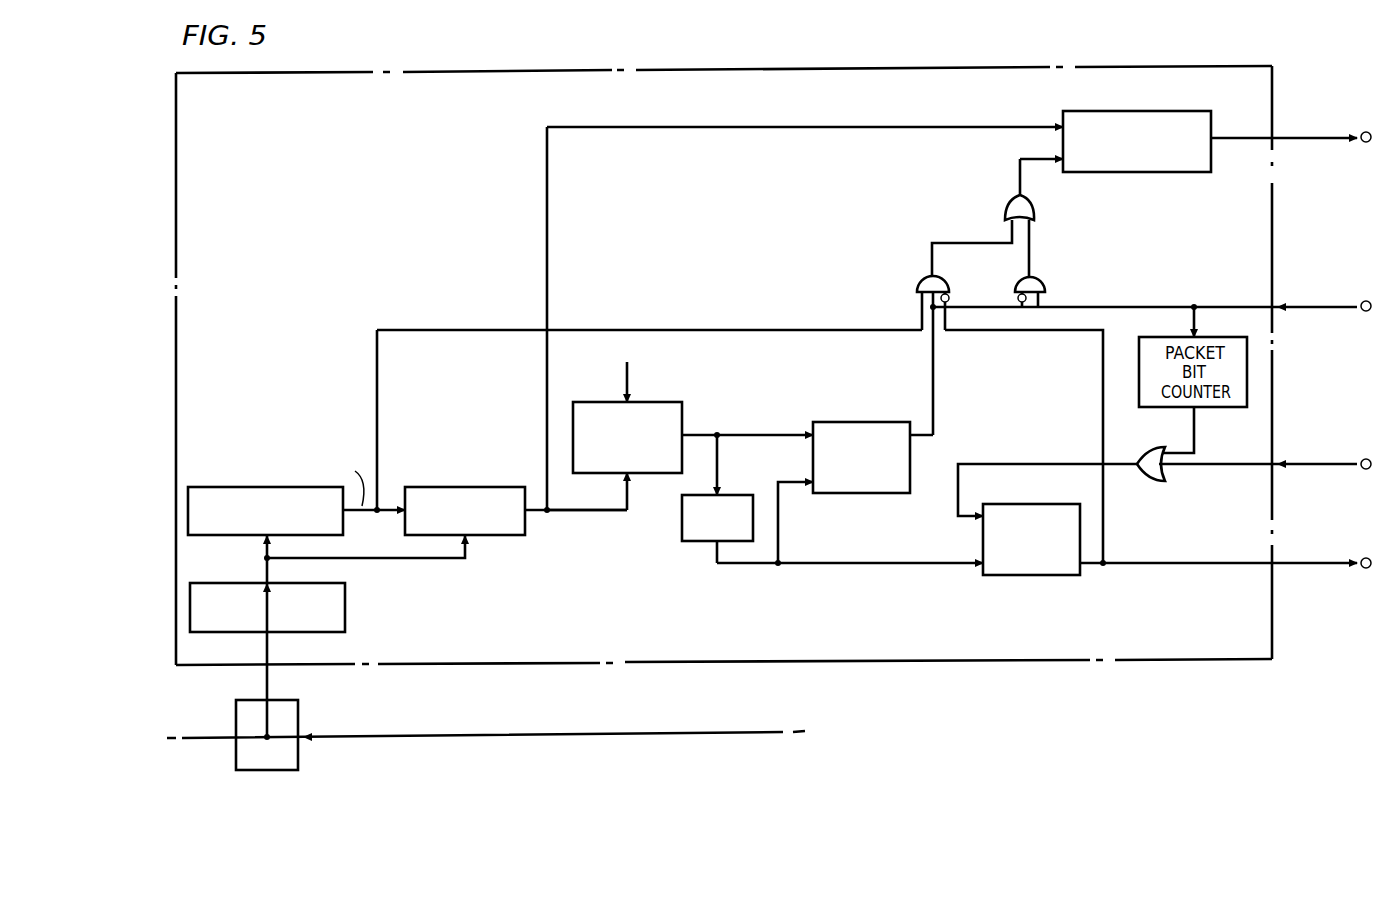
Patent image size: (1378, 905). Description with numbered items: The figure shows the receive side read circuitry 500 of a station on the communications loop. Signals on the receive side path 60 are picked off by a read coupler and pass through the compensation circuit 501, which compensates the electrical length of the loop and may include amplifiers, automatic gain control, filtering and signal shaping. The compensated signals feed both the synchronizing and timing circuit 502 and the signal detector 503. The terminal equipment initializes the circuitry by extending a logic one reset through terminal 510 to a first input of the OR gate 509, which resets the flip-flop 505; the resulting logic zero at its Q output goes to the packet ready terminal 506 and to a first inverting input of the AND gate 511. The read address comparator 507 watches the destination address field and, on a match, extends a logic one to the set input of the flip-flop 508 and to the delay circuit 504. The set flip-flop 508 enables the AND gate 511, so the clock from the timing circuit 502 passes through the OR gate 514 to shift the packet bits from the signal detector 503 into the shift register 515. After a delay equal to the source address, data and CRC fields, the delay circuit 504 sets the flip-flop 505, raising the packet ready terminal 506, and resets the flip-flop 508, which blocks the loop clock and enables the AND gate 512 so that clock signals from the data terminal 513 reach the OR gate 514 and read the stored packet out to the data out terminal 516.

The receive side read circuitry 500 is at (485, 72).
The compensation circuit 501 is at (345, 597).
The synchronizing and timing circuit 502 is at (250, 487).
The signal detector 503 is at (450, 487).
The delay circuit 504 is at (682, 520).
The flip-flop 505 is at (1037, 575).
The packet ready terminal 506 is at (1364, 569).
The read address comparator 507 is at (653, 402).
The flip-flop 508 is at (851, 422).
The OR gate 509 is at (1157, 482).
The reset terminal 510 is at (1364, 470).
The AND gate 511 is at (917, 280).
The AND gate 512 is at (1045, 284).
The data terminal 513 is at (1364, 312).
The OR gate 514 is at (1034, 204).
The shift register 515 is at (1137, 111).
The data out terminal 516 is at (1364, 143).
The receive side path 60 is at (568, 735).